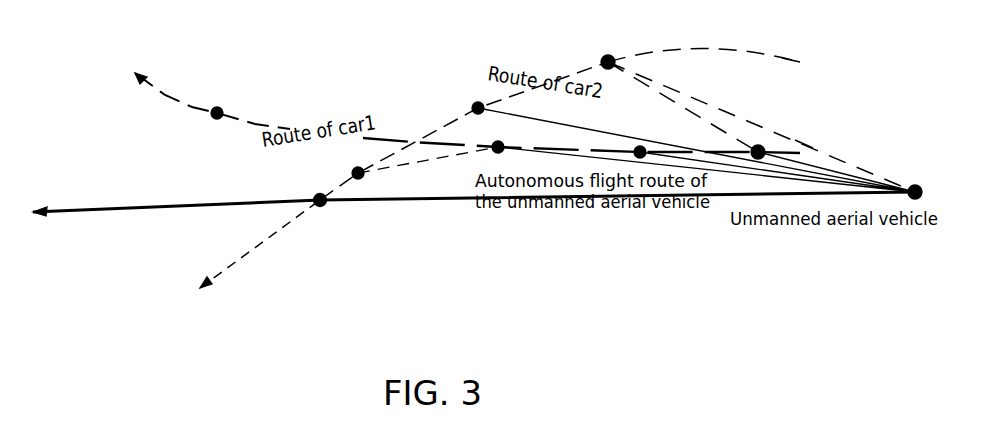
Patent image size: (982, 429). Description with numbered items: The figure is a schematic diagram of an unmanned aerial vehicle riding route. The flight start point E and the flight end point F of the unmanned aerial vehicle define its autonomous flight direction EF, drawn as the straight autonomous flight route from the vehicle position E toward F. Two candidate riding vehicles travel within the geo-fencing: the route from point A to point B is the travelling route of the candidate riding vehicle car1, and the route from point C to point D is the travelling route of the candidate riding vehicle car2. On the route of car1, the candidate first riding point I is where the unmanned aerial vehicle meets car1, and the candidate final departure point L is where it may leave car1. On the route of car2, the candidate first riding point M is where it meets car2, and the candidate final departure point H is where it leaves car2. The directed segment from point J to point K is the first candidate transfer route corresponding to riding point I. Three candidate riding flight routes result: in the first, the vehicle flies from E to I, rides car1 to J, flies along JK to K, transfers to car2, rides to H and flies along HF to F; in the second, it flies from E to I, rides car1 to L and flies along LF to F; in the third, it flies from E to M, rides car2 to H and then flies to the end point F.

The direction start point A is at (804, 135).
The direction end point B is at (143, 69).
The route start point C is at (794, 54).
The route end point D is at (198, 291).
The flight start point E is at (918, 193).
The flight end point F is at (40, 200).
The candidate final departure point H is at (326, 192).
The candidate first riding point I is at (644, 144).
The transfer departure point J is at (502, 138).
The transfer riding point K is at (364, 164).
The candidate final departure point L is at (220, 105).
The candidate first riding point M is at (484, 99).
The candidate riding vehicle car1 is at (754, 144).
The candidate riding vehicle car2 is at (593, 54).